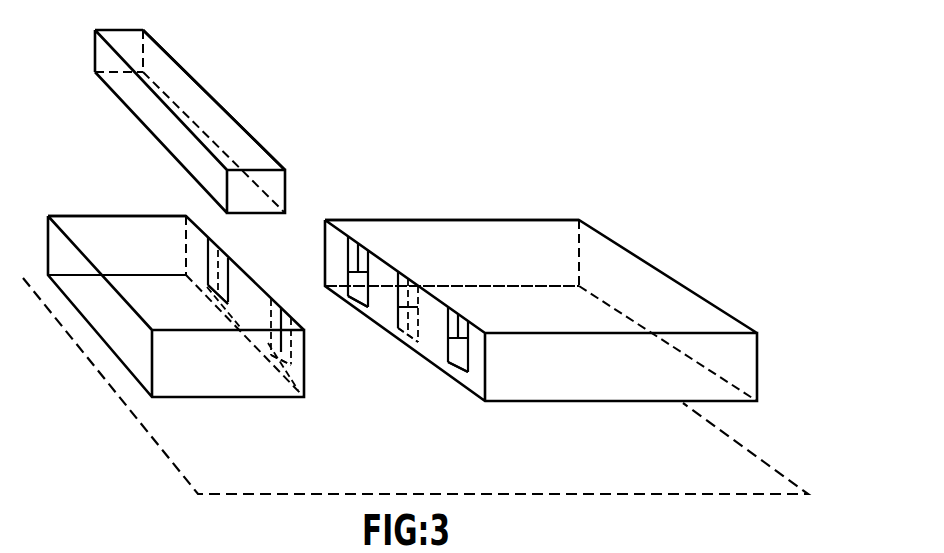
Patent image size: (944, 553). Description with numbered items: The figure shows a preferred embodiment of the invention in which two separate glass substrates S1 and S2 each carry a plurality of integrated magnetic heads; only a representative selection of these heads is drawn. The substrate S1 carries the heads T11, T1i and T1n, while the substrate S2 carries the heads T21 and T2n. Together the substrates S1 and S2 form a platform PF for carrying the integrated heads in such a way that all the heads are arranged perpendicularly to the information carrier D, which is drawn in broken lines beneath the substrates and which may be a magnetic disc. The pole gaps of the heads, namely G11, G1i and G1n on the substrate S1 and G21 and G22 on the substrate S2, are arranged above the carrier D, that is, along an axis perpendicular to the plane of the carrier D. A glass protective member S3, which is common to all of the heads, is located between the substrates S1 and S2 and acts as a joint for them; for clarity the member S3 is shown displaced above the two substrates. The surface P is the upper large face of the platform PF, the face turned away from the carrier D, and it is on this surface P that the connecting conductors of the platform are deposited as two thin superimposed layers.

The substrate S1 is at (680, 285).
The substrate S2 is at (67, 215).
The glass protective member S3 is at (113, 91).
The platform PF is at (243, 128).
The surface of the platform P is at (138, 264).
The information carrier D is at (613, 495).
The integrated magnetic head T1n is at (348, 240).
The integrated magnetic head T1i is at (398, 328).
The integrated magnetic head T11 is at (486, 382).
The integrated magnetic head T2n is at (228, 284).
The integrated magnetic head T21 is at (303, 378).
The pole gap G1n is at (357, 301).
The pole gap G1i is at (415, 347).
The pole gap G11 is at (452, 375).
The pole gap G22 is at (212, 300).
The pole gap G21 is at (278, 360).